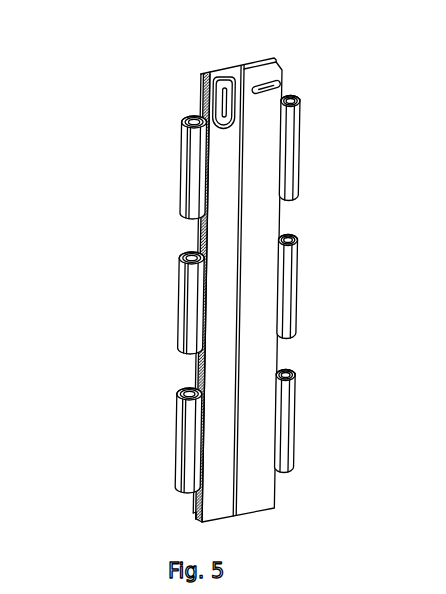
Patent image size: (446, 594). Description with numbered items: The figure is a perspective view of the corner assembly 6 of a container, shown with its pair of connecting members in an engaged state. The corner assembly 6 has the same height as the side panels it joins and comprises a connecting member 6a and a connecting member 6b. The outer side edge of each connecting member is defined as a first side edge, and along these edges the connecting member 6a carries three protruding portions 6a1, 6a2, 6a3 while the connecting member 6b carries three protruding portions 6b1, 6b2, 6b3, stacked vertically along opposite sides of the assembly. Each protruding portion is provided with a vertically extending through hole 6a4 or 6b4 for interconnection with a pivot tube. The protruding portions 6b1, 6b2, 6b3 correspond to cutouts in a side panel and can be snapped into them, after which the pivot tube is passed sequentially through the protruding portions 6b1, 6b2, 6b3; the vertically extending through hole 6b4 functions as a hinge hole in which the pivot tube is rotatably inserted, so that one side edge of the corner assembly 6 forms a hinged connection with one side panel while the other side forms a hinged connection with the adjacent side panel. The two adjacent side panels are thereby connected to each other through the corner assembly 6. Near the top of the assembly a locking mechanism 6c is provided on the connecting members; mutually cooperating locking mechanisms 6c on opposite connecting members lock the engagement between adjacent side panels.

The corner assembly 6 is at (203, 230).
The connecting member 6a is at (218, 378).
The protruding portion 6a1 is at (185, 455).
The protruding portion 6a2 is at (185, 310).
The protruding portion 6a3 is at (186, 160).
The vertically extending through hole 6a4 is at (188, 116).
The connecting member 6b is at (265, 360).
The protruding portion 6b1 is at (285, 428).
The protruding portion 6b2 is at (282, 310).
The protruding portion 6b3 is at (285, 160).
The vertically extending through hole 6b4 is at (297, 96).
The locking mechanism 6c is at (218, 86).